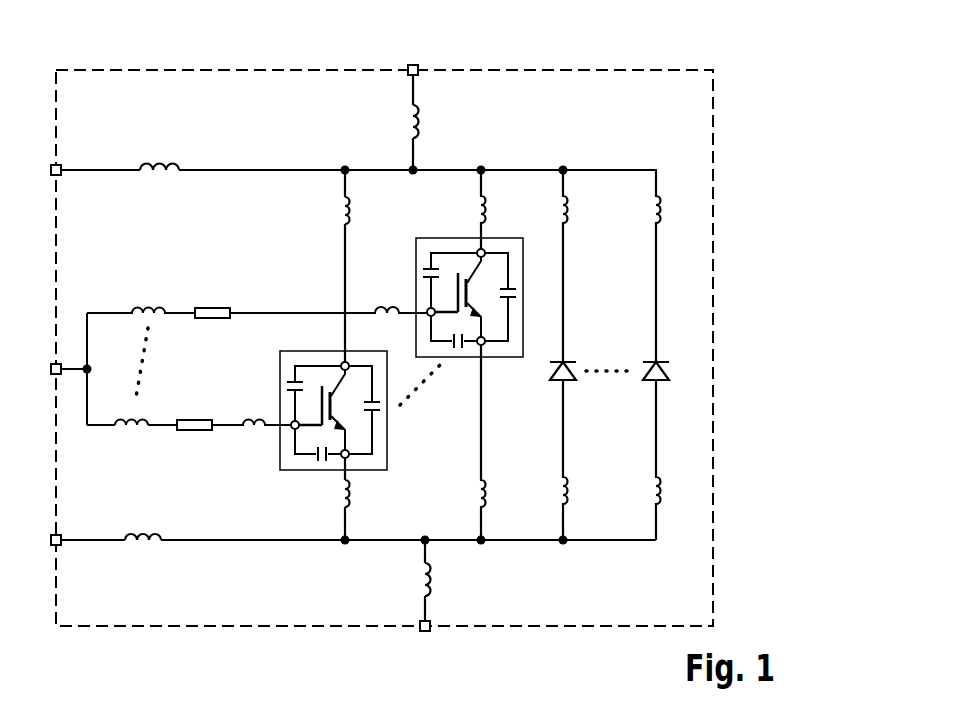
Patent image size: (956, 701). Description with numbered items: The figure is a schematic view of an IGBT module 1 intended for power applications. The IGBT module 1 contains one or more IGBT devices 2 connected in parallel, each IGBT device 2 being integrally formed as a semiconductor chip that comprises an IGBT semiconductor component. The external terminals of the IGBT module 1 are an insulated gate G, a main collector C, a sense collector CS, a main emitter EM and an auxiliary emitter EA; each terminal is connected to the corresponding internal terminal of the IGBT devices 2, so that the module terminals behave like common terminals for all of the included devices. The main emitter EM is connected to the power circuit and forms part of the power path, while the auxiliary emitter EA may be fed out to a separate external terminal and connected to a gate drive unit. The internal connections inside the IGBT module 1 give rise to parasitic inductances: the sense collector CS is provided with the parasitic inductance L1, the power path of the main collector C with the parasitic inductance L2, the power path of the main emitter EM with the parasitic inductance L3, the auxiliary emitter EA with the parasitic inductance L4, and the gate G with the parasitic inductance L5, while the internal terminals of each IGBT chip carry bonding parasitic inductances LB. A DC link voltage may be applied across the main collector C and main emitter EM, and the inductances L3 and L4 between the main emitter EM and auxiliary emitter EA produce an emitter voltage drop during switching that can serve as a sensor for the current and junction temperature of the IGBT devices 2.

The IGBT module 1 is at (632, 70).
The IGBT device 2 is at (387, 443).
The main collector C is at (412, 56).
The sense collector CS is at (39, 173).
The insulated gate G is at (45, 370).
The auxiliary emitter EA is at (39, 543).
The main emitter EM is at (426, 647).
The parasitic inductance L1 is at (159, 185).
The parasitic inductance L2 is at (401, 121).
The parasitic inductance L3 is at (413, 579).
The parasitic inductance L4 is at (143, 554).
The parasitic inductance L5 is at (131, 440).
The bonding parasitic inductance LB is at (332, 355).